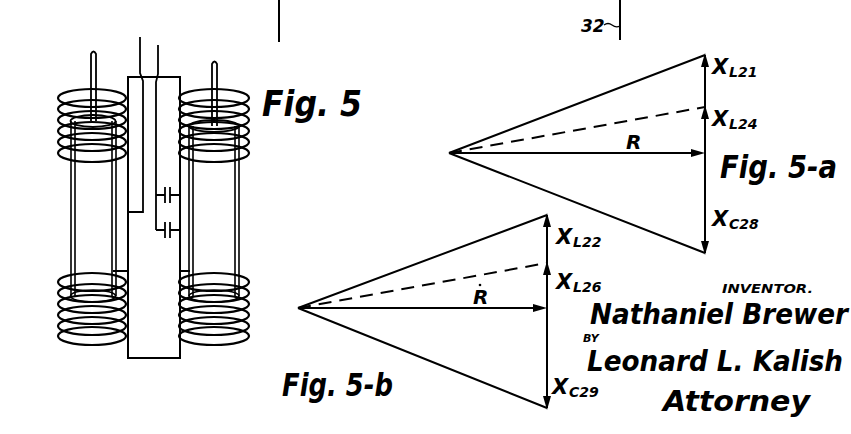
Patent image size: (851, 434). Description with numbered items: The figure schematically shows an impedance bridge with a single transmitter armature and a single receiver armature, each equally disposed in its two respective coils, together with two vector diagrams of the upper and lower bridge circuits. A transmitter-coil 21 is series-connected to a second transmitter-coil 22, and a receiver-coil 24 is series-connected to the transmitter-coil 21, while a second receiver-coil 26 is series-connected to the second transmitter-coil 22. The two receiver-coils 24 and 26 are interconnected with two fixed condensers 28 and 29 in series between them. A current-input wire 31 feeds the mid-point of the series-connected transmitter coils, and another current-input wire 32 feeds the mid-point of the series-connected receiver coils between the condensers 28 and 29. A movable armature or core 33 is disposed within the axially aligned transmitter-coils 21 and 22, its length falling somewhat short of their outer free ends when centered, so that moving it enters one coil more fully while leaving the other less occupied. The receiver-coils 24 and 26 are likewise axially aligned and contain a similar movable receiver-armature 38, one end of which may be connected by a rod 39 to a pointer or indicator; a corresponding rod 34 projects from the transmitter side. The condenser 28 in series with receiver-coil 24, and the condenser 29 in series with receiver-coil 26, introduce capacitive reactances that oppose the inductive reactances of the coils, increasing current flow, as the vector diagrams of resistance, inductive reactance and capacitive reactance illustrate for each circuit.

The transmitter-coil 21 is at (63, 92).
The second transmitter-coil 22 is at (70, 340).
The receiver-coil 24 is at (240, 150).
The second receiver-coil 26 is at (177, 310).
The fixed condenser 28 is at (165, 207).
The fixed condenser 29 is at (165, 238).
The current-input wire 31 is at (140, 43).
The current-input wire 32 is at (159, 55).
The movable armature 33 is at (78, 209).
The left rod 34 is at (96, 63).
The receiver-armature 38 is at (227, 225).
The rod 39 is at (217, 88).